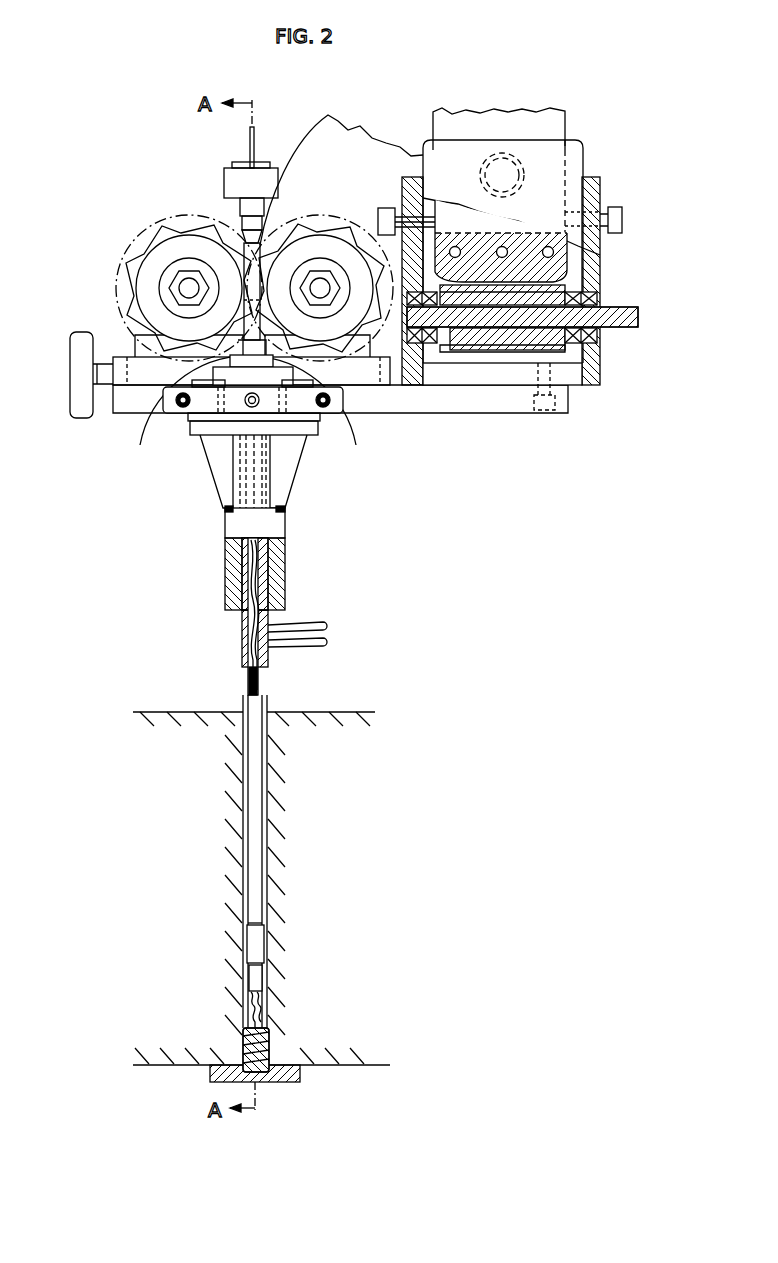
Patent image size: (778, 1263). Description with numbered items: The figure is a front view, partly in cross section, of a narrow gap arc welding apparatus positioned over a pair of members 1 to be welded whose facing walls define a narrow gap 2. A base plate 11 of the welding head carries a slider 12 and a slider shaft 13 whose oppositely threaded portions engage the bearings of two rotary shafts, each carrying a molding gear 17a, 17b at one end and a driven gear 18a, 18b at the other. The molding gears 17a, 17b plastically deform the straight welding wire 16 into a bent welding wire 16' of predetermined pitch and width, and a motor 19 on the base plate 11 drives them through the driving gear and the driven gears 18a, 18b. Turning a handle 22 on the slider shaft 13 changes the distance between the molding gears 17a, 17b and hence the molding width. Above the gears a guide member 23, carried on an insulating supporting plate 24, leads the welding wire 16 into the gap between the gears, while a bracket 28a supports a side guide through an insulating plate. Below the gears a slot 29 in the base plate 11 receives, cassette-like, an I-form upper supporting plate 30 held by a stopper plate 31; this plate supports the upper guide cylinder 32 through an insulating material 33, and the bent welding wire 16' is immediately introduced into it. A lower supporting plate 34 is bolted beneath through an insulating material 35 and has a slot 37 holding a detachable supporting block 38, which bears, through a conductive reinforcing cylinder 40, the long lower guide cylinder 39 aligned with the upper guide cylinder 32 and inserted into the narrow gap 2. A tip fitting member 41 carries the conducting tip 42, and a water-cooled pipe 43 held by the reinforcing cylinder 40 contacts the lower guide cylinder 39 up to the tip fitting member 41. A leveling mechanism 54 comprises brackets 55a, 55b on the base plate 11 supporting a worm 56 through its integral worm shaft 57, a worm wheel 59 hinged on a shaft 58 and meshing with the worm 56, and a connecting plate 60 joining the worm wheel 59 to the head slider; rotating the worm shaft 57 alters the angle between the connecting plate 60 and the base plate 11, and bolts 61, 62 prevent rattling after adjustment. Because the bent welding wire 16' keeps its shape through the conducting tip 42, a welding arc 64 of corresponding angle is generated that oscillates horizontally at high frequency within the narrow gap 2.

The members to be welded 1 is at (158, 716).
The narrow gap 2 is at (245, 712).
The base plate 11 is at (418, 414).
The slider 12 is at (122, 355).
The slider shaft 13 is at (114, 387).
The welding wire 16 is at (267, 575).
The bent welding wire 16' is at (221, 616).
The molding gear 17a is at (335, 243).
The molding gear 17b is at (132, 270).
The driven gear 18a is at (305, 230).
The driven gear 18b is at (193, 227).
The motor 19 is at (318, 133).
The handle 22 is at (72, 394).
The guide member 23 is at (241, 214).
The supporting plate 24 is at (224, 182).
The bracket 28a is at (318, 408).
The slot 29 is at (282, 440).
The upper supporting plate 30 is at (243, 420).
The stopper plate 31 is at (232, 506).
The upper guide cylinder 32 is at (236, 370).
The insulating material 33 is at (212, 422).
The lower supporting plate 34 is at (283, 505).
The insulating material 35 is at (290, 445).
The slot 37 is at (228, 546).
The supporting block 38 is at (285, 550).
The lower guide cylinder 39 is at (258, 692).
The reinforcing cylinder 40 is at (268, 622).
The tip fitting member 41 is at (262, 946).
The conducting tip 42 is at (262, 980).
The water-cooled pipe 43 is at (305, 642).
The leveling mechanism 54 is at (605, 253).
The bracket 55a is at (418, 385).
The bracket 55b is at (583, 372).
The worm 56 is at (572, 298).
The worm shaft 57 is at (638, 318).
The shaft 58 is at (512, 177).
The worm wheel 59 is at (565, 264).
The connecting plate 60 is at (562, 122).
The bolt 61 is at (385, 208).
The bolt 62 is at (622, 222).
The welding arc 64 is at (268, 1030).